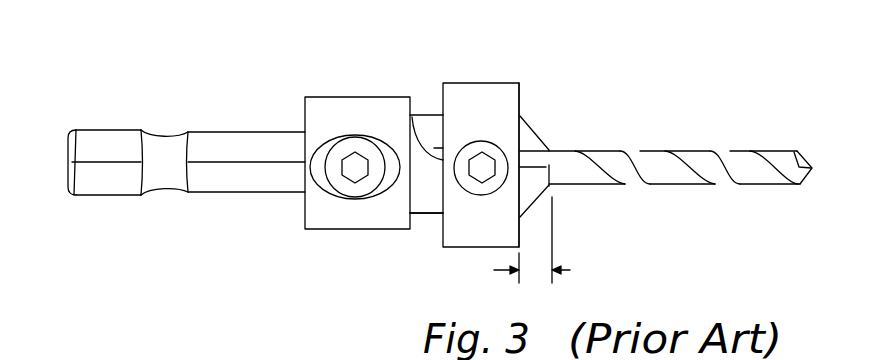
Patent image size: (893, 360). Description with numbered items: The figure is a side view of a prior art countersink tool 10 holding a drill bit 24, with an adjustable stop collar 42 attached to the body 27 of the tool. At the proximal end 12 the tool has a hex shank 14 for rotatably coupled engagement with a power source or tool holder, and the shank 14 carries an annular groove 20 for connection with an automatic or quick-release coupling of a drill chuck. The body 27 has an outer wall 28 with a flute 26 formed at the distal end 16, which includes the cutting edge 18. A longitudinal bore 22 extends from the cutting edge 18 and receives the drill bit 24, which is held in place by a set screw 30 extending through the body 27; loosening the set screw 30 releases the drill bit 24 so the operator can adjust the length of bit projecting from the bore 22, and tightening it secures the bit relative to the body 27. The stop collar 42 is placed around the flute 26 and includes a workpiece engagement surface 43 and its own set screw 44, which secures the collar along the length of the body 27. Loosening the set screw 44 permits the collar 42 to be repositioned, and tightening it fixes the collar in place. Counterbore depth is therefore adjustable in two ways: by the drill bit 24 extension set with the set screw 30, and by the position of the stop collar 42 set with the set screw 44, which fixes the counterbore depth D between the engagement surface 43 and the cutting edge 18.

The countersink tool 10 is at (351, 97).
The proximal end 12 is at (68, 142).
The shank 14 is at (205, 140).
The distal end 16 is at (521, 148).
The cutting edge 18 is at (537, 181).
The annular groove 20 is at (162, 186).
The longitudinal bore 22 is at (530, 149).
The drill bit 24 is at (690, 158).
The flute 26 is at (432, 124).
The body 27 is at (432, 215).
The outer wall 28 is at (425, 183).
The set screw 30 is at (347, 153).
The stop collar 42 is at (490, 91).
The workpiece engagement surface 43 is at (521, 92).
The set screw 44 is at (480, 170).